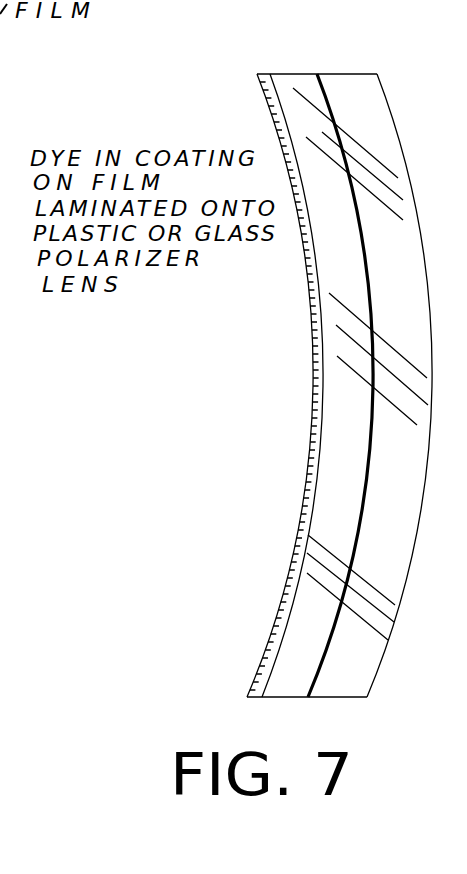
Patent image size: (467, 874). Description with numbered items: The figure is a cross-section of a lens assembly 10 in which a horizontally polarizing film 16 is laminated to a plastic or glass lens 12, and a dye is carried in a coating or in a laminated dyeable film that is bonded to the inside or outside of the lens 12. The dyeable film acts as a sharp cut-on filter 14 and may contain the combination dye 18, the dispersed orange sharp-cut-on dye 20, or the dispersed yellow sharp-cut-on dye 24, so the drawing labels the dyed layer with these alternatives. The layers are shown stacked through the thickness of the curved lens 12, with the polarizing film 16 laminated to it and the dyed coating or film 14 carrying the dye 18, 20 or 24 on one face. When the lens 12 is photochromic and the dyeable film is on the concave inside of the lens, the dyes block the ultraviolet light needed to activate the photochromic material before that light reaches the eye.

The lens assembly 10 is at (332, 61).
The plastic lens 12 is at (306, 122).
The sharp cut-on filter 14 is at (312, 452).
The horizontally polarizing film 16 is at (366, 245).
The combination dye 18 is at (271, 385).
The dispersed orange three sharp-cut-on dye 20 is at (271, 385).
The dispersed yellow twenty-three sharp-cut-on dye 24 is at (297, 583).